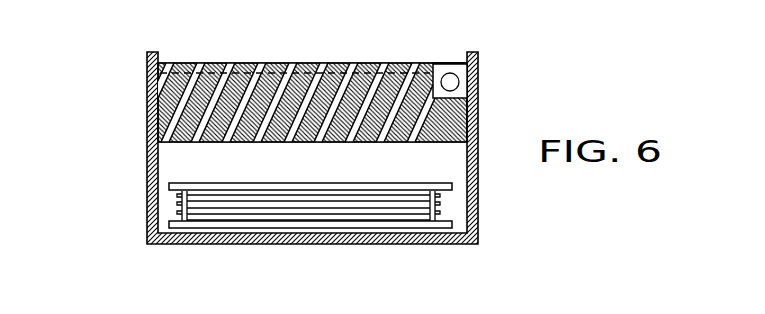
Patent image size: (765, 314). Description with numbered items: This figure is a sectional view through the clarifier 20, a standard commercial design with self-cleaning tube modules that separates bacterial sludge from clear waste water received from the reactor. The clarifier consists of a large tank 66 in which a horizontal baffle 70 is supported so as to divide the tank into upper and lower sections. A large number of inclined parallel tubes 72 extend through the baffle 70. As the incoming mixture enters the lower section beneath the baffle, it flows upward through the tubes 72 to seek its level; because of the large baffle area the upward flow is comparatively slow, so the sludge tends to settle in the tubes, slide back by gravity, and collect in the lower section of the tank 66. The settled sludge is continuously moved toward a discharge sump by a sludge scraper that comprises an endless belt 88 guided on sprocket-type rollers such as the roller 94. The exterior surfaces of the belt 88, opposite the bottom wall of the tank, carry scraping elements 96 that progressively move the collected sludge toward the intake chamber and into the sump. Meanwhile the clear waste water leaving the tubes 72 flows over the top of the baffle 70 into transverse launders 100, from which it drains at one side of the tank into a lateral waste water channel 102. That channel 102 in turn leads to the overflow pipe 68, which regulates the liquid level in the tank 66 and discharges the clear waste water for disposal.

The clarifier 20 is at (144, 67).
The tank 66 is at (478, 237).
The overflow pipe 68 is at (447, 73).
The horizontal baffle 70 is at (185, 76).
The inclined parallel tubes 72 is at (322, 75).
The endless belt 88 is at (175, 197).
The sprocket-type roller 94 is at (442, 205).
The scraping elements 96 is at (440, 183).
The transverse launders 100 is at (407, 62).
The lateral waste water channel 102 is at (460, 92).